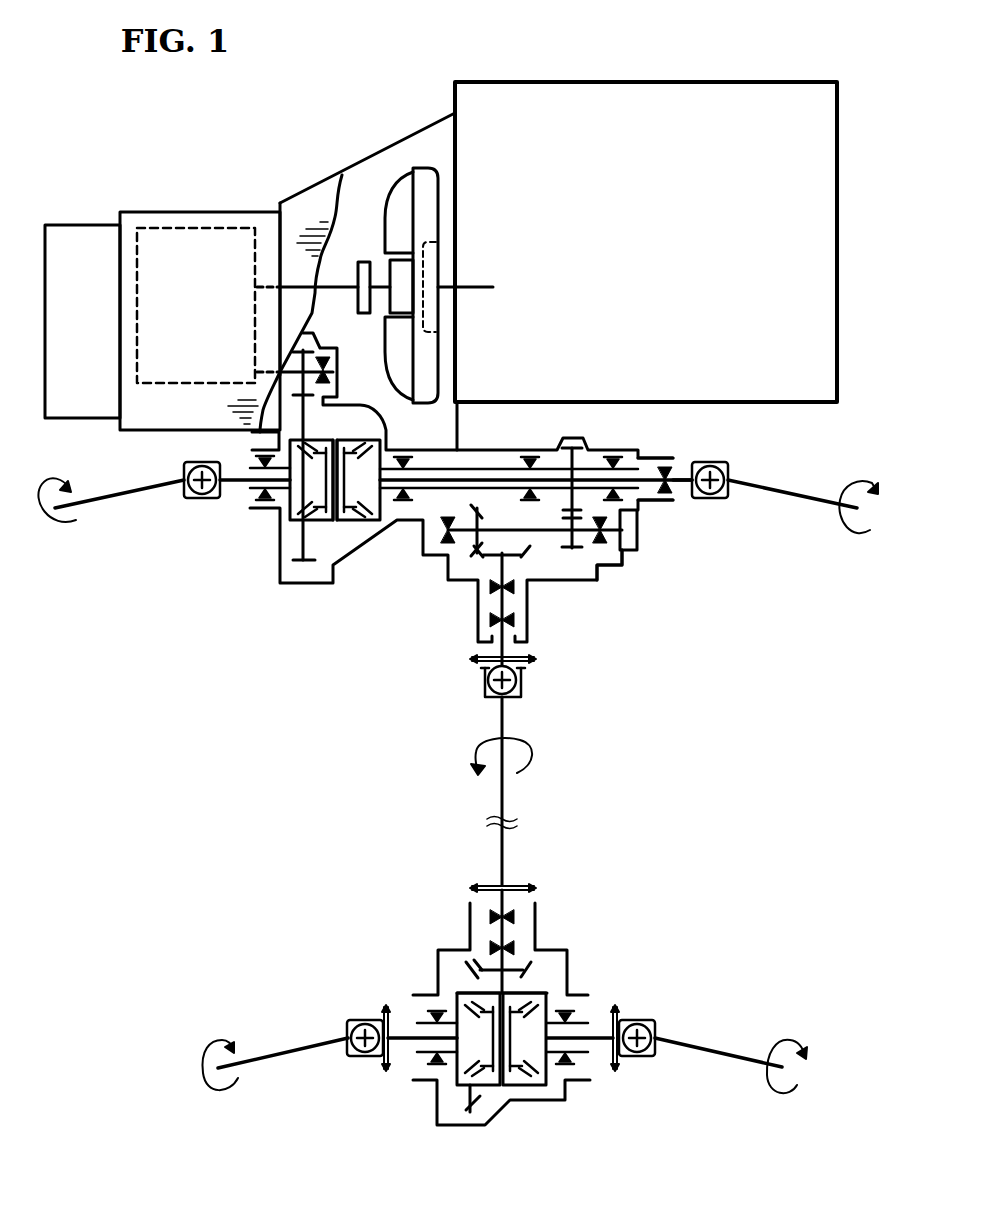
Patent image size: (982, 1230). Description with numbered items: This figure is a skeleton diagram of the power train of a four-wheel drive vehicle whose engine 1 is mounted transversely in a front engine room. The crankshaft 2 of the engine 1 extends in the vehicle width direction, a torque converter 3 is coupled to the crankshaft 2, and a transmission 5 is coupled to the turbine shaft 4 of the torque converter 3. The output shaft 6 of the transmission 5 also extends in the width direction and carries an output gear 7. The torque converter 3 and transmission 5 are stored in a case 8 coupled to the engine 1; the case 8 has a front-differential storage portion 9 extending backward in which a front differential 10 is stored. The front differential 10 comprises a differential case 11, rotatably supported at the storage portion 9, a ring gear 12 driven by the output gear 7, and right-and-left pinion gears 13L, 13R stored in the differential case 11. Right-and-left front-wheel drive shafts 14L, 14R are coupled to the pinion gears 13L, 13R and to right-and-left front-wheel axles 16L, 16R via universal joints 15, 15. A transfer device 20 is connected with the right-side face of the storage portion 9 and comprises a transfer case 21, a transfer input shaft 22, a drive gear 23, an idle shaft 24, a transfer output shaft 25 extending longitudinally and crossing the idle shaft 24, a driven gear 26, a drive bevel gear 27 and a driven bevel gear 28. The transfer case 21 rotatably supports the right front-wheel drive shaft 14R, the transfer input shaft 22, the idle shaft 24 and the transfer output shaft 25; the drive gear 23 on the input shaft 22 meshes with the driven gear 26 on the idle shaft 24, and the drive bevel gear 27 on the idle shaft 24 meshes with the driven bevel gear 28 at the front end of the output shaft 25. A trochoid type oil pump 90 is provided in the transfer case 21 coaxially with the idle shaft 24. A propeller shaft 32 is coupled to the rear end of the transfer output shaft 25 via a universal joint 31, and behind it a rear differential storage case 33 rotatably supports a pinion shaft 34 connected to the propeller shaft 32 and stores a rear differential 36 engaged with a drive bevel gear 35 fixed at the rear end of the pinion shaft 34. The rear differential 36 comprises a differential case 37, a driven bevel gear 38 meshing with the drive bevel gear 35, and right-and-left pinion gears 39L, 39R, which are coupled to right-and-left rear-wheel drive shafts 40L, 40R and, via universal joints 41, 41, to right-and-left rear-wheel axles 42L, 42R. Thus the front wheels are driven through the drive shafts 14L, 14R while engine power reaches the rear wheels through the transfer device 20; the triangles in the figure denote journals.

The engine 1 is at (676, 80).
The crankshaft 2 is at (485, 283).
The torque converter 3 is at (441, 192).
The turbine shaft 4 is at (338, 283).
The transmission 5 is at (185, 224).
The output shaft 6 is at (292, 380).
The output gear 7 is at (317, 350).
The case 8 is at (131, 211).
The front-differential storage portion 9 is at (318, 586).
The front differential 10 is at (319, 524).
The differential case 11 is at (340, 523).
The ring gear 12 is at (303, 563).
The left pinion gear 13L is at (289, 517).
The right pinion gear 13R is at (376, 521).
The left front-wheel drive shaft 14L is at (235, 476).
The right front-wheel drive shaft 14R is at (465, 477).
The universal joint 15 is at (184, 470).
The left front-wheel axle 16L is at (112, 492).
The right front-wheel axle 16R is at (780, 488).
The transfer device 20 is at (655, 518).
The transfer case 21 is at (629, 566).
The transfer input shaft 22 is at (484, 522).
The drive gear 23 is at (579, 438).
The idle shaft 24 is at (543, 533).
The transfer output shaft 25 is at (475, 624).
The driven gear 26 is at (577, 549).
The drive bevel gear 27 is at (453, 577).
The driven bevel gear 28 is at (475, 590).
The universal joint 31 is at (485, 687).
The propeller shaft 32 is at (497, 713).
The rear differential storage case 33 is at (458, 948).
The pinion shaft 34 is at (506, 933).
The drive bevel gear 35 is at (528, 968).
The rear differential 36 is at (447, 964).
The differential case 37 is at (453, 1076).
The driven bevel gear 38 is at (476, 1102).
The left pinion gear 39L is at (467, 1080).
The right pinion gear 39R is at (537, 1079).
The left rear-wheel drive shaft 40L is at (407, 1024).
The right rear-wheel drive shaft 40R is at (597, 1024).
The universal joint 41 is at (348, 1020).
The left rear-wheel axle 42L is at (300, 1048).
The right rear-wheel axle 42R is at (703, 1047).
The oil pump 90 is at (642, 545).